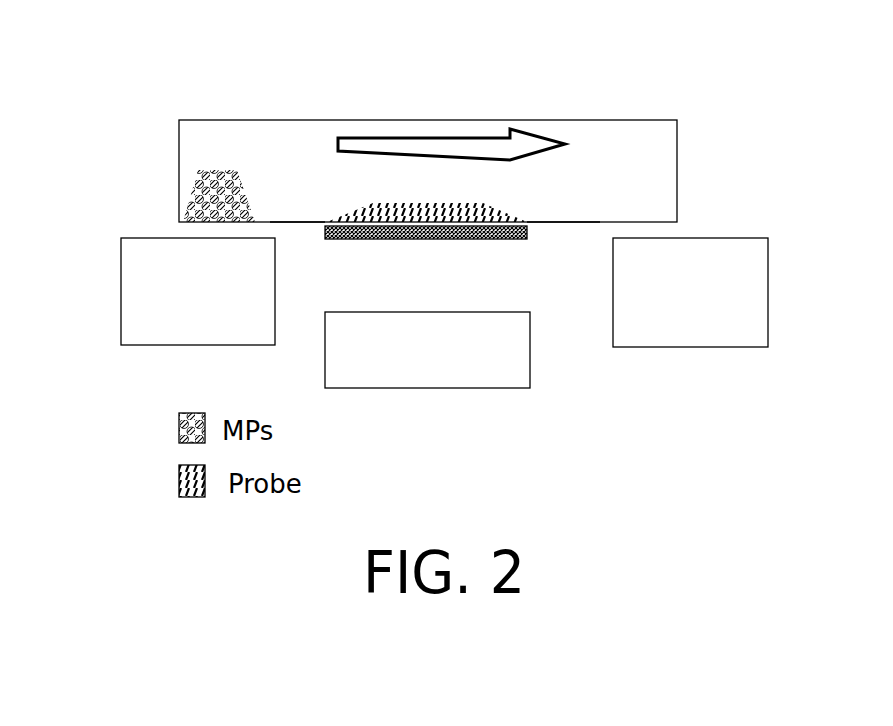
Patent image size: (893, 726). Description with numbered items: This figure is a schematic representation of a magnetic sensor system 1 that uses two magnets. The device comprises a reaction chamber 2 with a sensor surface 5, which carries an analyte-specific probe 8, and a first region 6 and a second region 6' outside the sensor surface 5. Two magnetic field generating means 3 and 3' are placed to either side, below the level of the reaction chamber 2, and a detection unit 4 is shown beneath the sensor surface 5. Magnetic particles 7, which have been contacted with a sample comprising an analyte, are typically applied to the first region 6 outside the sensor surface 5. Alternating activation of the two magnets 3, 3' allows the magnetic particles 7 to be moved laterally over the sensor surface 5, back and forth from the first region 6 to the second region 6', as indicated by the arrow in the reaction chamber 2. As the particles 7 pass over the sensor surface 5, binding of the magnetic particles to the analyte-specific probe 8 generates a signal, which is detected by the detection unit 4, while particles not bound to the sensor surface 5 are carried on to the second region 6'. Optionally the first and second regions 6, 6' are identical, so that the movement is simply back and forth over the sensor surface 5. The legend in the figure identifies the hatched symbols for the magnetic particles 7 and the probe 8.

The sensor system 1 is at (676, 82).
The reaction chamber 2 is at (677, 171).
The magnetic field generating means 3 is at (690, 327).
The magnetic field generating means 3' is at (162, 291).
The detection unit 4 is at (502, 388).
The sensor surface 5 is at (420, 243).
The first region outside the sensor surface 6 is at (297, 189).
The second region outside the sensor surface 6' is at (563, 189).
The magnetic particles 7 is at (190, 196).
The analyte-specific probe 8 is at (433, 207).